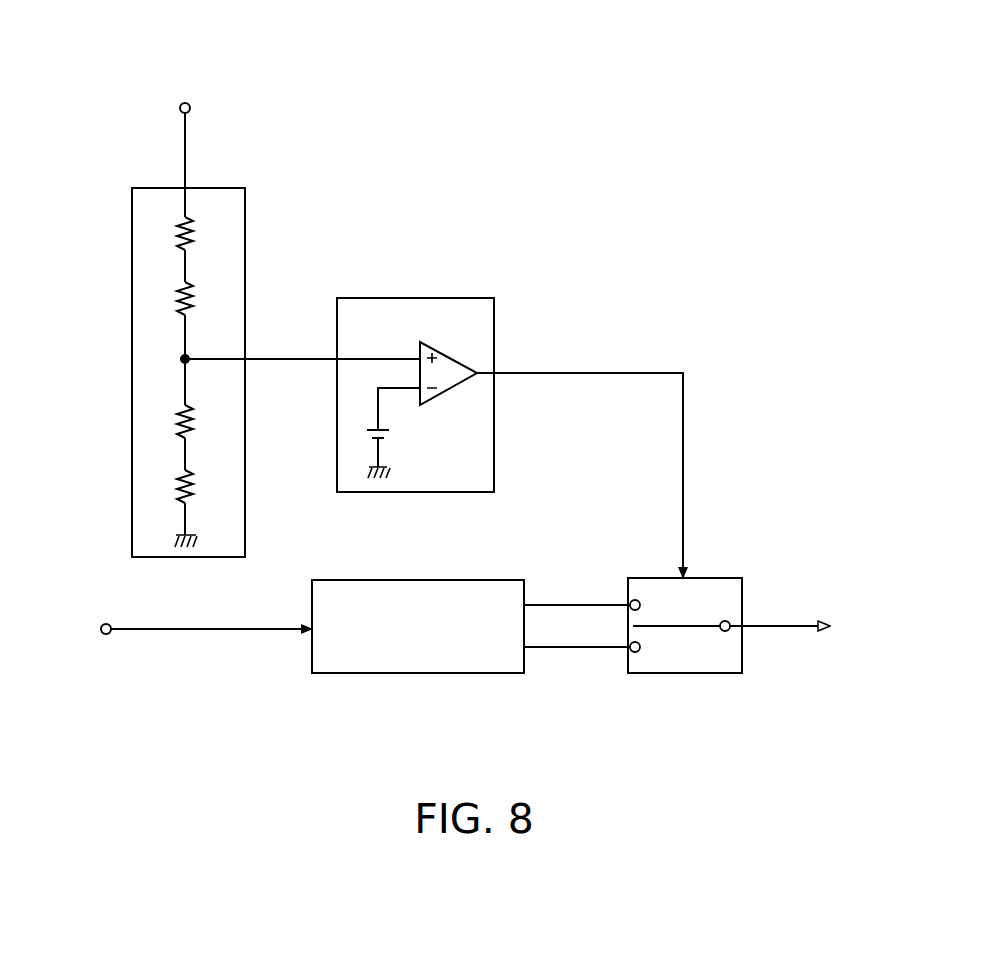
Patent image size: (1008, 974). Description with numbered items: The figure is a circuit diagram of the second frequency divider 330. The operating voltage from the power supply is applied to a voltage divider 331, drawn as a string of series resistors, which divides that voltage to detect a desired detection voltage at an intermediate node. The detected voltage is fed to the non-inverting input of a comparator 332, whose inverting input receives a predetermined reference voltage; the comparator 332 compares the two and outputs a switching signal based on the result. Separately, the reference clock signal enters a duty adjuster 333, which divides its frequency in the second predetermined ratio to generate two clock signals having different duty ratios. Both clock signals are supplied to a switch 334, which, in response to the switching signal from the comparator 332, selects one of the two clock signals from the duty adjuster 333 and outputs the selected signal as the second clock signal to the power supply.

The second frequency divider 330 is at (332, 77).
The voltage divider 331 is at (245, 223).
The comparator 332 is at (452, 298).
The duty adjuster 333 is at (445, 673).
The switch 334 is at (697, 673).